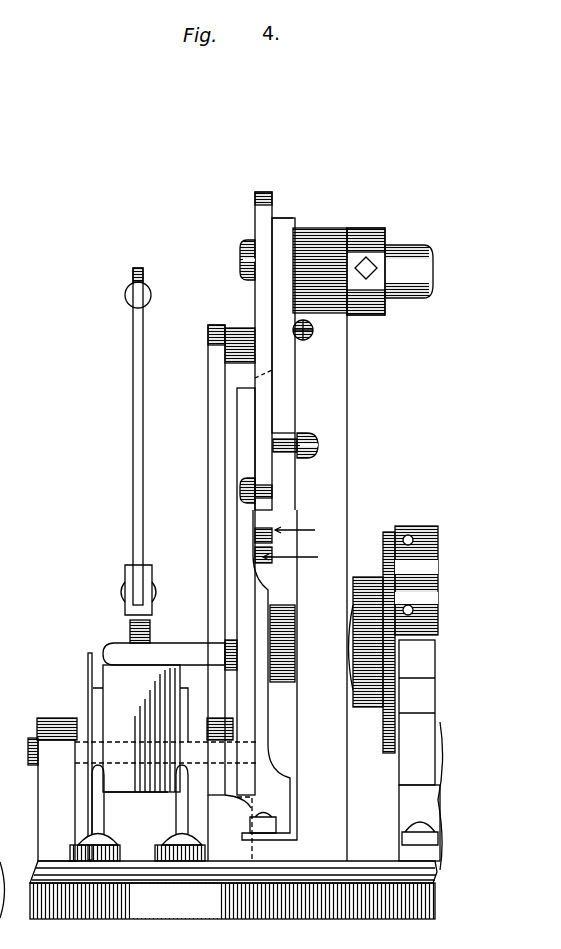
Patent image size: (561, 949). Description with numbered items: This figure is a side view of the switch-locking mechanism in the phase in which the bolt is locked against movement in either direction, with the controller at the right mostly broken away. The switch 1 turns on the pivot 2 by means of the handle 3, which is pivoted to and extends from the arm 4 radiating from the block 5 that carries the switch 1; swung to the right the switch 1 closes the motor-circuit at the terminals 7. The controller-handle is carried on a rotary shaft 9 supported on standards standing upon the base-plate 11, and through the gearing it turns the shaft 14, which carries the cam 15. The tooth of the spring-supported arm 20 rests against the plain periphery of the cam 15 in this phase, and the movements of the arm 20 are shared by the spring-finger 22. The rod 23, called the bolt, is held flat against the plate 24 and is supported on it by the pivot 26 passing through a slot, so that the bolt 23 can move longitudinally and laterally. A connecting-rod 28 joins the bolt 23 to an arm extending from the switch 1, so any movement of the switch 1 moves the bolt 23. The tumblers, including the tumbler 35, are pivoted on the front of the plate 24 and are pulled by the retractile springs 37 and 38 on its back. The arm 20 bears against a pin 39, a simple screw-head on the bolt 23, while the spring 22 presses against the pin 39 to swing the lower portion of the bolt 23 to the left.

The switch 1 is at (90, 703).
The pivot 2 is at (28, 748).
The handle 3 is at (125, 295).
The arm 4 is at (145, 436).
The block 5 is at (126, 795).
The motor-circuit terminals 7 is at (100, 787).
The rotary shaft 9 is at (367, 269).
The base-plate 11 is at (233, 903).
The shaft 14 is at (350, 627).
The cam 15 is at (273, 590).
The spring-supported arm 20 is at (242, 543).
The spring-finger 22 is at (235, 593).
The bolt 23 is at (246, 225).
The plate 24 is at (284, 301).
The pivot 26 is at (240, 249).
The connecting-rod 28 is at (212, 498).
The tumbler 35 is at (256, 422).
The retractile spring 37 is at (305, 340).
The retractile spring 38 is at (305, 433).
The pin 39 is at (240, 490).